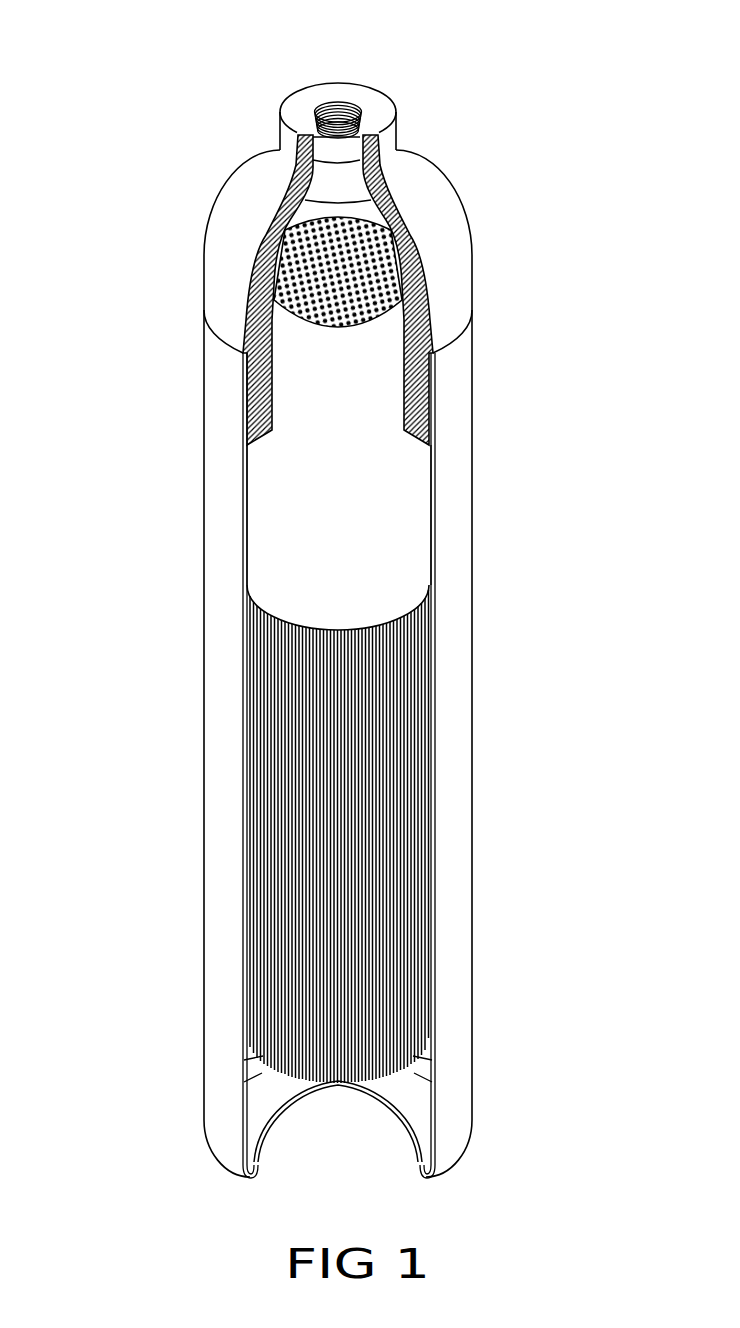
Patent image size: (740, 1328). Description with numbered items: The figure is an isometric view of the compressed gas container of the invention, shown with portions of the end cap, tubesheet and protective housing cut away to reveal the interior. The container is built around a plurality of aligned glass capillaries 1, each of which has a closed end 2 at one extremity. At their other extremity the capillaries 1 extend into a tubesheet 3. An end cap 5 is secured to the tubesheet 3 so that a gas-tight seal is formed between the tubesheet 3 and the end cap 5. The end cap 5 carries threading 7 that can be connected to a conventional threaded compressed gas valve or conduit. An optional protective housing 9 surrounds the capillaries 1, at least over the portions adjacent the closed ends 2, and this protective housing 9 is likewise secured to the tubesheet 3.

The glass capillaries 1 is at (407, 835).
The closed end 2 is at (288, 1070).
The tubesheet 3 is at (285, 515).
The end cap 5 is at (418, 303).
The threading 7 is at (348, 113).
The protective housing 9 is at (463, 544).